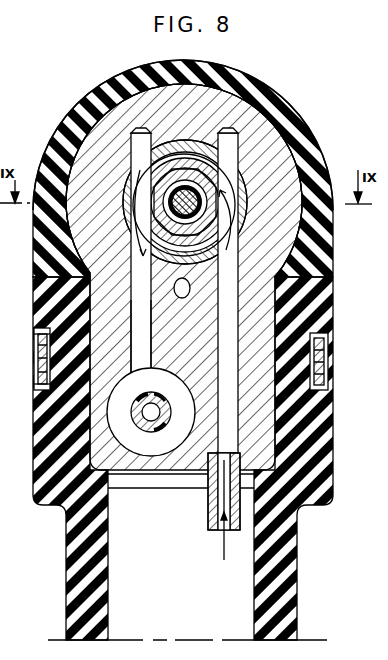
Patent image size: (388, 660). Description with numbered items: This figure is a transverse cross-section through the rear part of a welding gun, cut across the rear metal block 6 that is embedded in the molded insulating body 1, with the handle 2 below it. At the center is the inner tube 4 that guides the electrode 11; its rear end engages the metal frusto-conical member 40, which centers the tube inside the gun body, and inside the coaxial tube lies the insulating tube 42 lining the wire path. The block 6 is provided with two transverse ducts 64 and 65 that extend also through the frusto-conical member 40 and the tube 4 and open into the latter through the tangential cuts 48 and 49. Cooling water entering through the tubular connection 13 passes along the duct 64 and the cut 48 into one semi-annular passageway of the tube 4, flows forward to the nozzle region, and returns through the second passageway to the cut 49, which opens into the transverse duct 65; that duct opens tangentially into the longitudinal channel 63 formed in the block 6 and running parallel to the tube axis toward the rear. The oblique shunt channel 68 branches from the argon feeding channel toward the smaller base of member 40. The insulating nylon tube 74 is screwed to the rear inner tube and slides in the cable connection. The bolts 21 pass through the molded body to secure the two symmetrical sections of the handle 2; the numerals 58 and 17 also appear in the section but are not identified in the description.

The body 1 is at (140, 73).
The handle 2 is at (70, 520).
The inner tube 4 is at (233, 118).
The rear metal block 6 is at (222, 105).
The frusto-conical member 40 is at (165, 165).
The tangential cut 48 is at (229, 182).
The insulating tube 42 is at (200, 202).
The tangential cut 49 is at (150, 202).
The electrode 11 is at (133, 212).
The transverse duct 64 is at (234, 270).
The transverse duct 65 is at (142, 337).
The shunt channel 68 is at (182, 298).
The longitudinal channel 63 is at (138, 447).
The tube 74 is at (171, 428).
The tubular connection 13 is at (208, 517).
The bolt 21 is at (330, 342).
The screw 58 is at (25, 341).
The retainer 17 is at (25, 384).